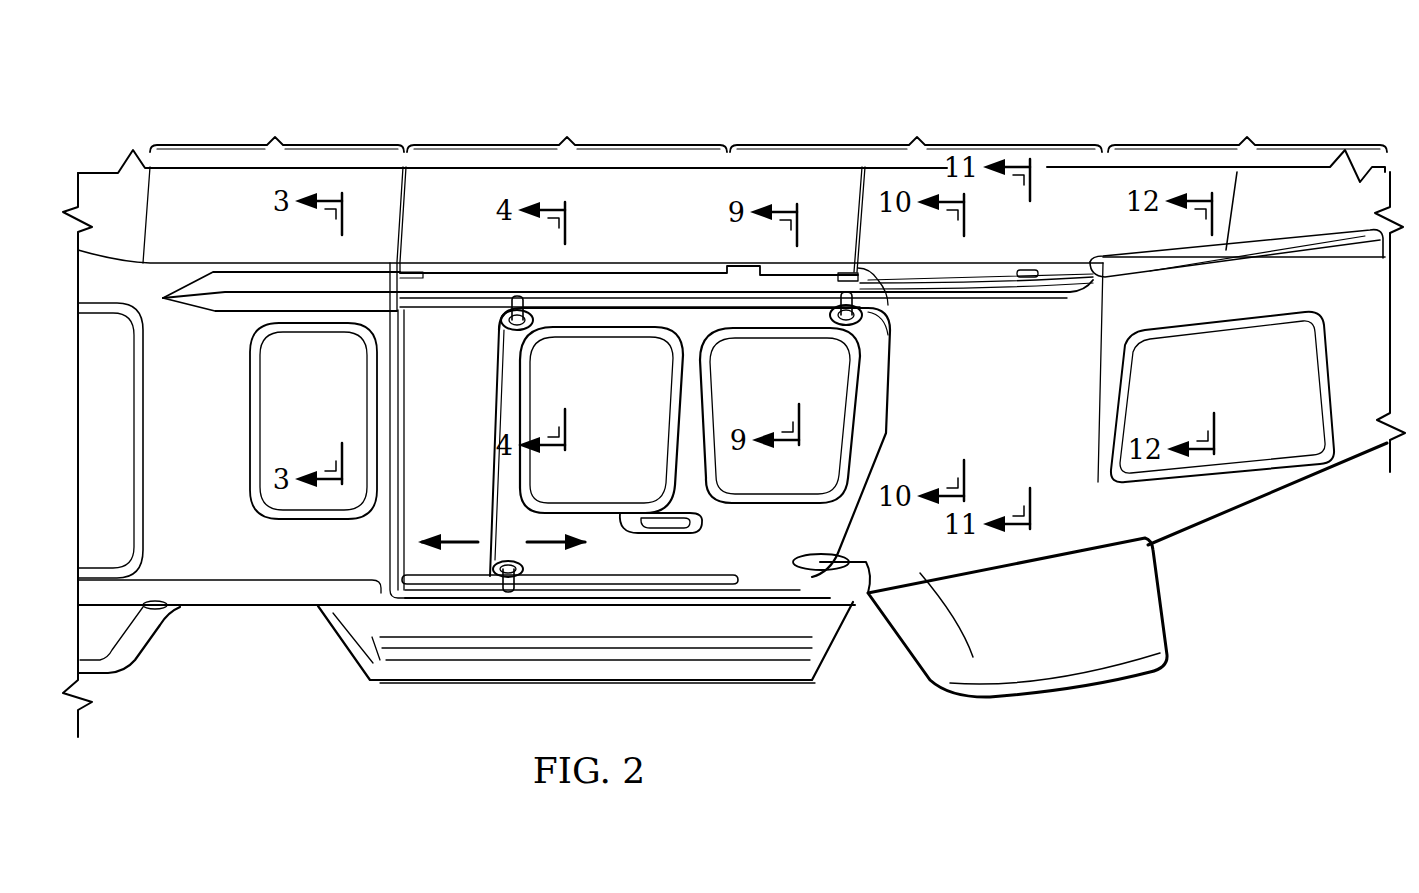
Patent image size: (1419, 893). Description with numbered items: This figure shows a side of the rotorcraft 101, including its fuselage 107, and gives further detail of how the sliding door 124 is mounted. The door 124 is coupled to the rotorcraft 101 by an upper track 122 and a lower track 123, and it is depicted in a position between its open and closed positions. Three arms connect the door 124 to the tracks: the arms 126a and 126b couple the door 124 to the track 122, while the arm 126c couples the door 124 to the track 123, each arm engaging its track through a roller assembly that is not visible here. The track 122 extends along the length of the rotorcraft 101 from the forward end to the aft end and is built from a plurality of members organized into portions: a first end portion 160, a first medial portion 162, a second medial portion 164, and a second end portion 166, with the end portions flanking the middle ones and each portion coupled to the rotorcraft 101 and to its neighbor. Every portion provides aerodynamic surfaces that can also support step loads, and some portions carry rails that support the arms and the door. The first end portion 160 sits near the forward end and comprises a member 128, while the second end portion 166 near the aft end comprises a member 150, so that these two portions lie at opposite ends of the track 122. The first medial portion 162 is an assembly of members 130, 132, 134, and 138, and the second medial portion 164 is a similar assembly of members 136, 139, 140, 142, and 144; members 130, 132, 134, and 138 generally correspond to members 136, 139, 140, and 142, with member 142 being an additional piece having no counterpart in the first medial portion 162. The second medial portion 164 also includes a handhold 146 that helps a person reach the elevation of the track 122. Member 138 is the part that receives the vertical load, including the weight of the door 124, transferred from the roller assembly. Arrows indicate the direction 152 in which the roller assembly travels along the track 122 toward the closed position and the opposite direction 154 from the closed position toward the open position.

The rotorcraft 101 is at (200, 95).
The fuselage 107 is at (155, 330).
The track 122 is at (213, 248).
The track 123 is at (613, 583).
The door 124 is at (705, 557).
The arm 126a is at (513, 352).
The arm 126b is at (864, 336).
The arm 126c is at (506, 540).
The member 128 is at (267, 300).
The member 130 is at (413, 283).
The member 132 is at (482, 287).
The member 134 is at (597, 277).
The member 136 is at (747, 280).
The member 138 is at (553, 297).
The member 139 is at (812, 280).
The member 140 is at (833, 276).
The member 142 is at (855, 273).
The member 144 is at (980, 277).
The handhold 146 is at (1030, 282).
The member 150 is at (1197, 263).
The direction 152 is at (460, 545).
The direction 154 is at (547, 545).
The first end portion 160 is at (277, 128).
The first medial portion 162 is at (567, 128).
The second medial portion 164 is at (916, 128).
The second end portion 166 is at (1247, 128).